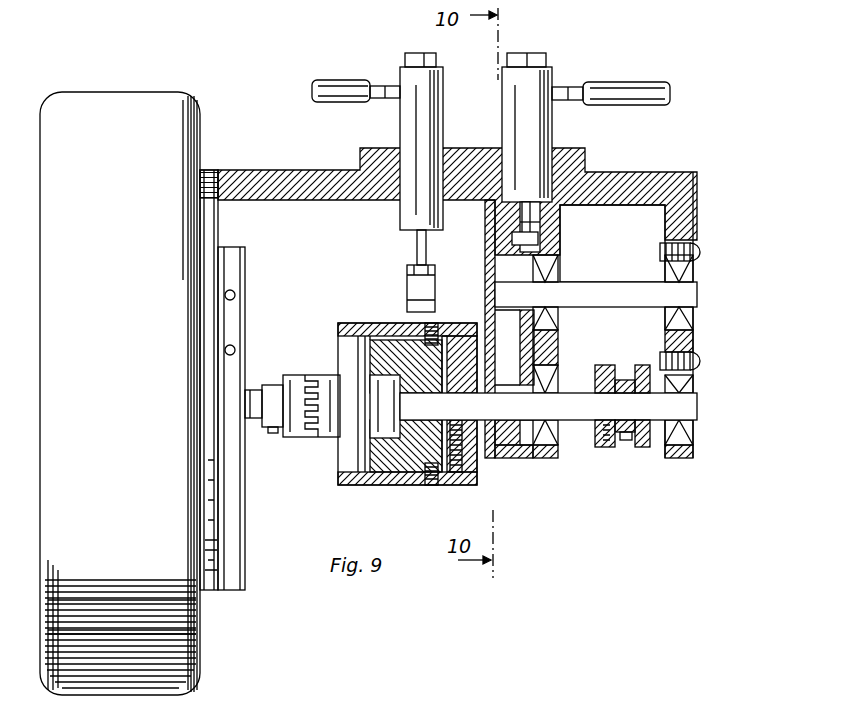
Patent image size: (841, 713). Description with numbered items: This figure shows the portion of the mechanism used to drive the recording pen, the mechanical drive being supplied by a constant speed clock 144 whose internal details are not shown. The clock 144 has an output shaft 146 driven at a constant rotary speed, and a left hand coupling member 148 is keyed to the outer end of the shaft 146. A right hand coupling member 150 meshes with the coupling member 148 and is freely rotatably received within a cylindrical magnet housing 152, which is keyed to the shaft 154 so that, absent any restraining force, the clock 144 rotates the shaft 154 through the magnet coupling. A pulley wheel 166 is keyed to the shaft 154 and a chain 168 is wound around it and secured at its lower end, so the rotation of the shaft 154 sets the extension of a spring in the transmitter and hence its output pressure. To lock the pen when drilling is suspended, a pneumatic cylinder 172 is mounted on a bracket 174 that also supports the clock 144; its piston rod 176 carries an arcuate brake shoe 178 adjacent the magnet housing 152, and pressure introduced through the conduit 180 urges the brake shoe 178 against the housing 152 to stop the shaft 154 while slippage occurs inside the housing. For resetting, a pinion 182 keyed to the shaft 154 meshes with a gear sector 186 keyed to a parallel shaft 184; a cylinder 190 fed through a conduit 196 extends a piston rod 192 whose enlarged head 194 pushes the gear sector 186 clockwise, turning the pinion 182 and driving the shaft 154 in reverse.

The clock 144 is at (104, 503).
The output shaft 146 is at (262, 392).
The left hand coupling member 148 is at (295, 388).
The right hand coupling member 150 is at (330, 430).
The magnet housing 152 is at (372, 325).
The shaft 154 is at (578, 396).
The pulley wheel 166 is at (645, 448).
The chain 168 is at (626, 442).
The pneumatic cylinder 172 is at (412, 118).
The bracket 174 is at (290, 170).
The piston rod 176 is at (418, 246).
The brake shoe 178 is at (412, 282).
The conduit 180 is at (366, 88).
The pinion 182 is at (515, 458).
The shaft 184 is at (578, 292).
The gear sector 186 is at (508, 272).
The cylinder 190 is at (552, 126).
The piston rod 192 is at (553, 200).
The enlarged head 194 is at (545, 240).
The conduit 196 is at (638, 92).